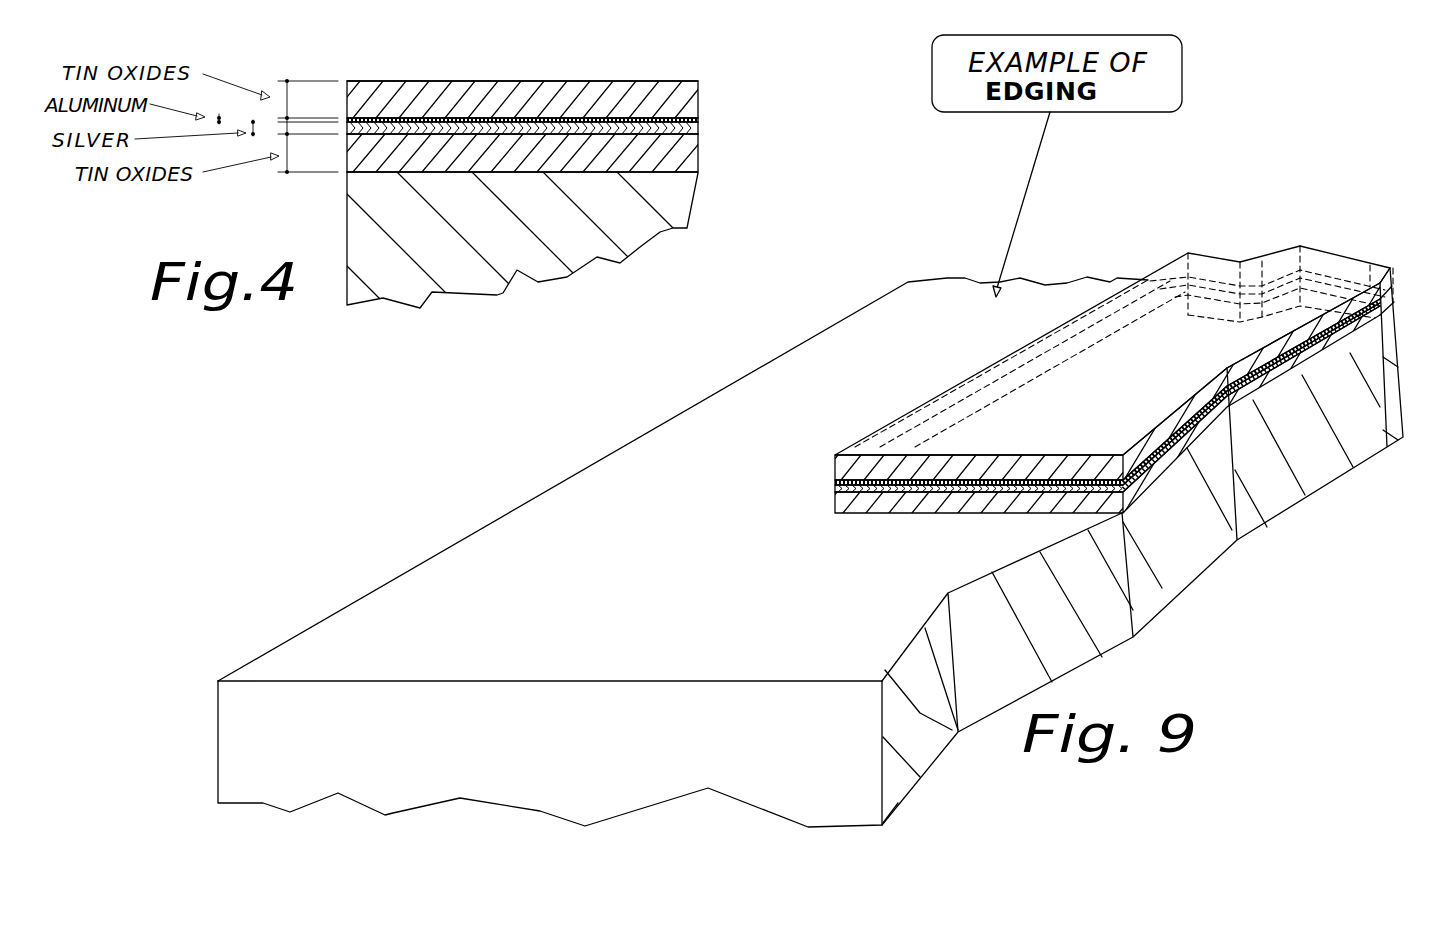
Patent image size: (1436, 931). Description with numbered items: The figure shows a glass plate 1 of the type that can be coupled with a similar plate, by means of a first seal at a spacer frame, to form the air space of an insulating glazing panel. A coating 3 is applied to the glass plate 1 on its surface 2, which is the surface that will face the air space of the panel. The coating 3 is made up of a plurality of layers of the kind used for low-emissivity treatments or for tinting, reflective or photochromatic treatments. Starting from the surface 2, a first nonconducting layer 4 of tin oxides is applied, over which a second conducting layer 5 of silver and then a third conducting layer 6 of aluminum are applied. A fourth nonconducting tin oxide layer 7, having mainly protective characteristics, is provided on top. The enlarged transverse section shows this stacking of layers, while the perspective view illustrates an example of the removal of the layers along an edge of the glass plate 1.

In FIG. 4, the glass plate 1 is at (539, 299).
In FIG. 9, the glass plate 1 is at (332, 562).
In FIG. 9, the surface 2 is at (282, 663).
In FIG. 4, the coating 3 is at (604, 56).
In FIG. 9, the coating 3 is at (1228, 232).
In FIG. 4, the first nonconducting layer 4 is at (698, 155).
In FIG. 9, the first nonconducting layer 4 is at (835, 505).
In FIG. 4, the second conducting layer 5 is at (698, 127).
In FIG. 9, the second conducting layer 5 is at (835, 488).
In FIG. 4, the third conducting layer 6 is at (698, 120).
In FIG. 9, the third conducting layer 6 is at (835, 480).
In FIG. 4, the fourth nonconducting tin oxide layer 7 is at (698, 97).
In FIG. 9, the fourth nonconducting tin oxide layer 7 is at (835, 468).